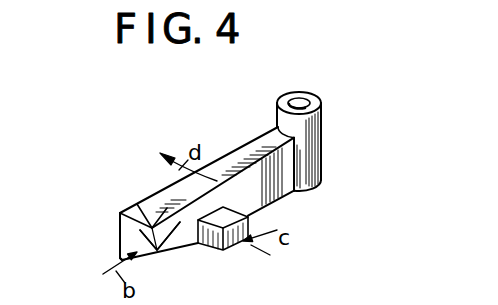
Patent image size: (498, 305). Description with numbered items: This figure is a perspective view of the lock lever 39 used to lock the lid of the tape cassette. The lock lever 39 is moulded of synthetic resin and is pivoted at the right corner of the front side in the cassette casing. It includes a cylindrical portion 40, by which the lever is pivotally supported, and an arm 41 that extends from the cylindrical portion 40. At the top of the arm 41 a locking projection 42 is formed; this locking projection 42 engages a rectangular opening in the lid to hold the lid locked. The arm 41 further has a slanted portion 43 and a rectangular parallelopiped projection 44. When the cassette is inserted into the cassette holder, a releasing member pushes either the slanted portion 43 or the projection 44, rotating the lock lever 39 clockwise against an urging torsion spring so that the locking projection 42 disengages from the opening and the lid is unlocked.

The lock lever 39 is at (249, 100).
The cylindrical portion 40 is at (318, 120).
The arm 41 is at (284, 190).
The locking projection 42 is at (166, 243).
The slanted portion 43 is at (120, 233).
The rectangular parallelopiped projection 44 is at (229, 241).